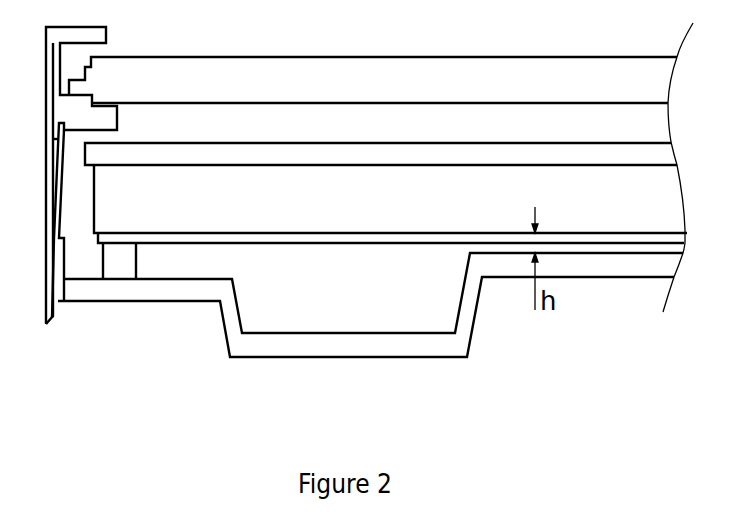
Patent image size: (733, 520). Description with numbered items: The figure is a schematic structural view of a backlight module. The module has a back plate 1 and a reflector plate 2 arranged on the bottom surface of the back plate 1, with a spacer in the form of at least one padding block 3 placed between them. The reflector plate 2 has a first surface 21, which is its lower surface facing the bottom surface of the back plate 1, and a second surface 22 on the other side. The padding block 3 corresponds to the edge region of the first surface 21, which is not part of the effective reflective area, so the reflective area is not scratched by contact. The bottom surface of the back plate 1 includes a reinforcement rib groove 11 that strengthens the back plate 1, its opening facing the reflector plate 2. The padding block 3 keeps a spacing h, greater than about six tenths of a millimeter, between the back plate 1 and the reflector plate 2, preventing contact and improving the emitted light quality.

The back plate 1 is at (288, 345).
The reinforcement rib groove 11 is at (445, 298).
The reflector plate 2 is at (202, 240).
The first surface 21 is at (400, 245).
The second surface 22 is at (317, 232).
The padding block 3 is at (125, 263).